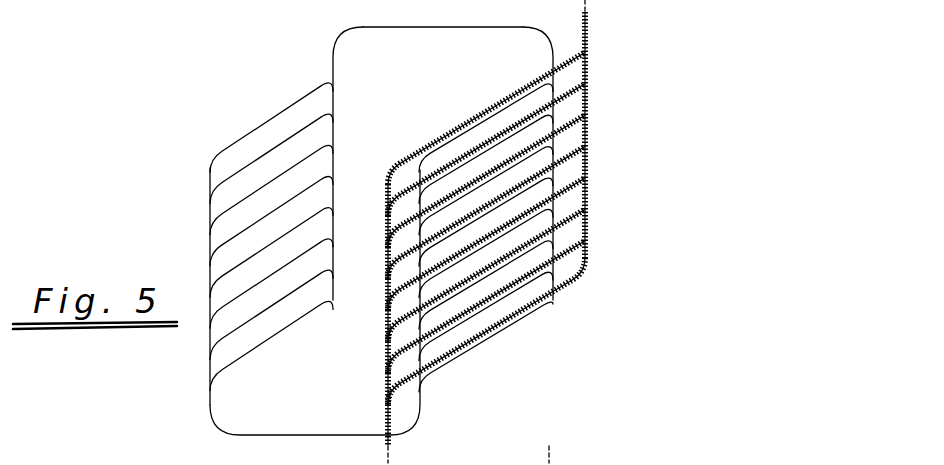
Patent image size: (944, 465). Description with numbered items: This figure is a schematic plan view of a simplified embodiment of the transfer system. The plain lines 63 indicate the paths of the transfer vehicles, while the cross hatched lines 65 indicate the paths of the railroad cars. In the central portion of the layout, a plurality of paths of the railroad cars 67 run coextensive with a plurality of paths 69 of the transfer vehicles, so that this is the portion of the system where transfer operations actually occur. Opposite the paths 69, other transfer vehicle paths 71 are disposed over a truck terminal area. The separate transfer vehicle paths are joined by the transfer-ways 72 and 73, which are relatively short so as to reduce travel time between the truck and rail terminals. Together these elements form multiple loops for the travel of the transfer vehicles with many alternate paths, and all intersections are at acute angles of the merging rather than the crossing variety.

The lines 63 is at (332, 59).
The cross hatched lines 65 is at (585, 33).
The paths of the railroad cars 67 is at (394, 228).
The paths of the transfer vehicles 69 is at (488, 147).
The transfer vehicle paths 71 is at (222, 206).
The transfer-way 72 is at (456, 28).
The transfer-way 73 is at (282, 435).